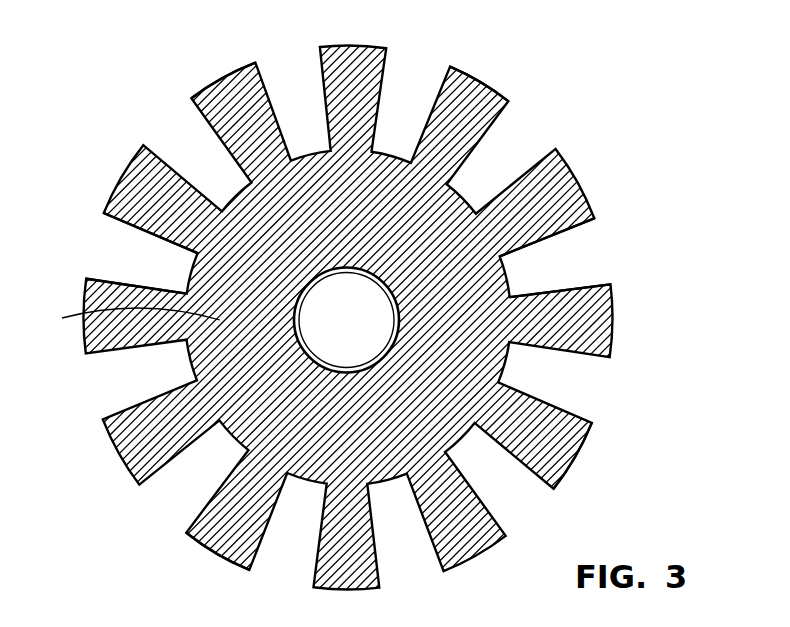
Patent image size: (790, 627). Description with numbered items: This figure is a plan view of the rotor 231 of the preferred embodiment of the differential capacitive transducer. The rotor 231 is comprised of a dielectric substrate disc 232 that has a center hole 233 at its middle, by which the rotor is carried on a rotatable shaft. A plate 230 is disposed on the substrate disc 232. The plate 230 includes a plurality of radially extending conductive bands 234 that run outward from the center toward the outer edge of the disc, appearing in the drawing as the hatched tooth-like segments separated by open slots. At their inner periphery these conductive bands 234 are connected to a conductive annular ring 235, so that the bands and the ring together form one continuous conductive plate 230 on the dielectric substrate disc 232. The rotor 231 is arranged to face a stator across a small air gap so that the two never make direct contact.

The plate 230 is at (581, 311).
The rotor 231 is at (538, 130).
The dielectric substrate disc 232 is at (108, 259).
The center hole 233 is at (360, 305).
The conductive bands 234 is at (136, 172).
The conductive annular ring 235 is at (125, 319).